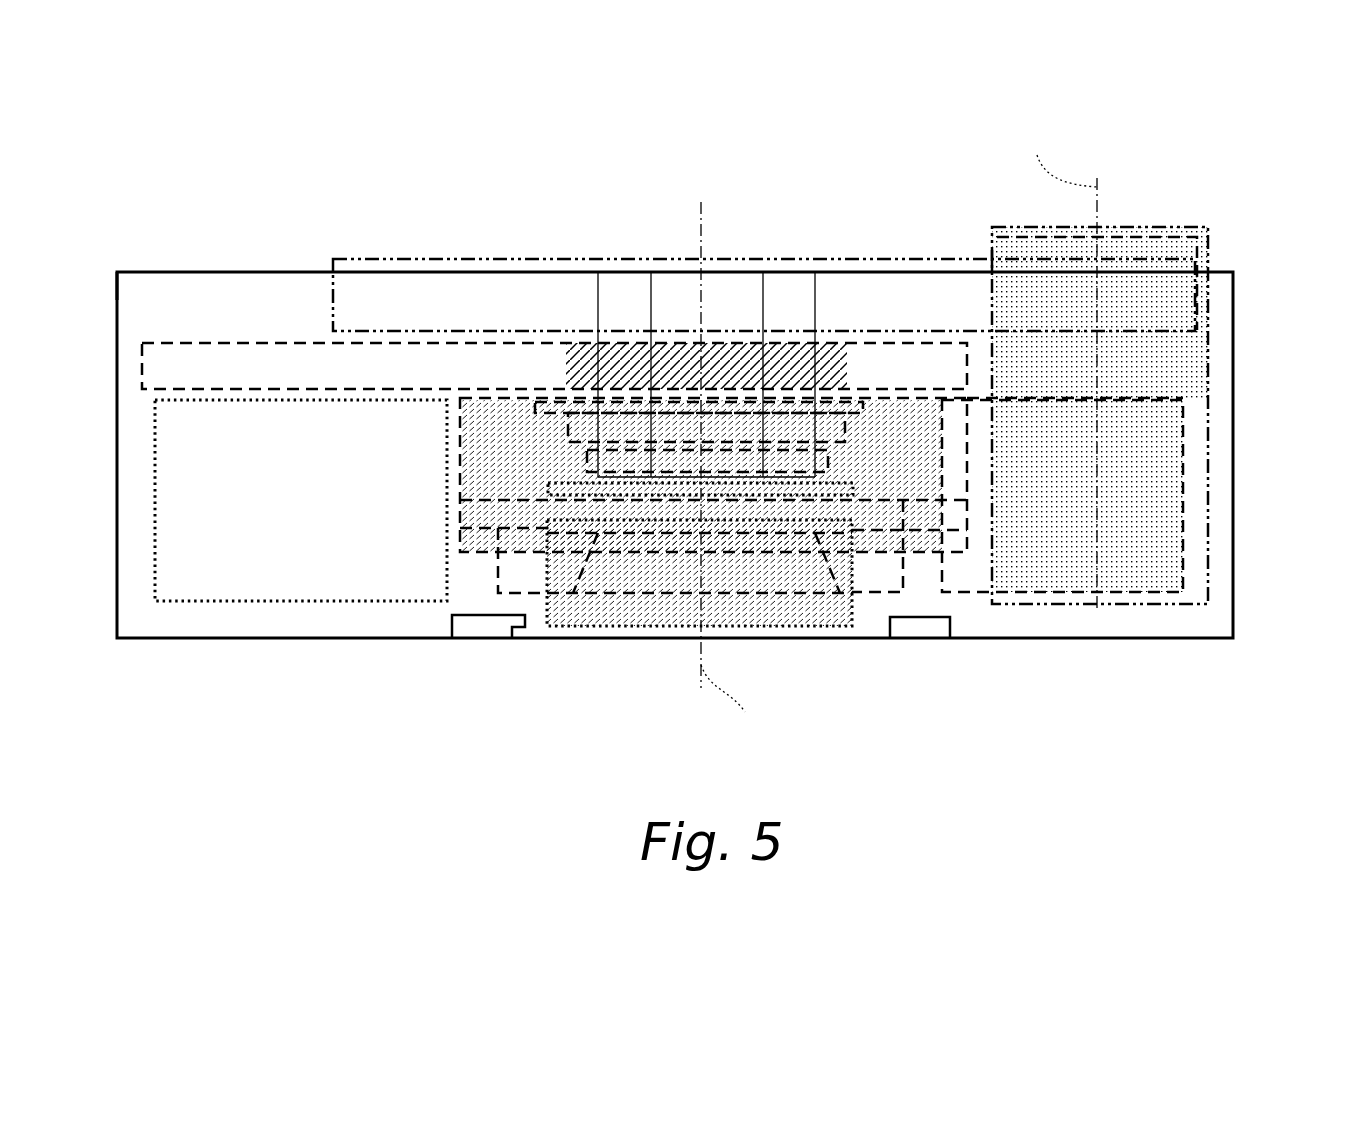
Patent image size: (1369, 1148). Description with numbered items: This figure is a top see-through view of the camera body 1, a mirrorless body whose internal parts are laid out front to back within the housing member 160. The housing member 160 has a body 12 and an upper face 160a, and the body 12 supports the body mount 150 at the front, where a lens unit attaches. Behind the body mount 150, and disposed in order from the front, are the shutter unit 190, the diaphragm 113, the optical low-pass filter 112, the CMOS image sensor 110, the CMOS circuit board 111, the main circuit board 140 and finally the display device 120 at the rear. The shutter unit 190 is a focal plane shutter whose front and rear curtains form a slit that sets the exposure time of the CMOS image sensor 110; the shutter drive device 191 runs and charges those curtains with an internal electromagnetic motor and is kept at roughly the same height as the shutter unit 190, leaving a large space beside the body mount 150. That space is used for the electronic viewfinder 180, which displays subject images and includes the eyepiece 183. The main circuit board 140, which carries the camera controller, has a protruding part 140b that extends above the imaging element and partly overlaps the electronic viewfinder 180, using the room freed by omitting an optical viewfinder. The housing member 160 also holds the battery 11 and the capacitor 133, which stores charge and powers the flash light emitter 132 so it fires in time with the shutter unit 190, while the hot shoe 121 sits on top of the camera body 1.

The camera body 1 is at (450, 208).
The battery 11 is at (230, 445).
The body 12 is at (873, 575).
The CMOS image sensor 110 is at (865, 437).
The CMOS circuit board 111 is at (870, 407).
The optical low-pass filter 112 is at (828, 458).
The diaphragm 113 is at (853, 493).
The display device 120 is at (850, 297).
The hot shoe 121 is at (625, 296).
The flash light emitter 132 is at (635, 600).
The capacitor 133 is at (485, 458).
The main circuit board 140 is at (292, 367).
The protruding part 140b is at (748, 357).
The body mount 150 is at (472, 640).
The housing member 160 is at (1237, 603).
The upper face 160a is at (175, 303).
The electronic viewfinder 180 is at (1185, 245).
The eyepiece 183 is at (1125, 232).
The shutter unit 190 is at (920, 513).
The shutter drive device 191 is at (1077, 565).